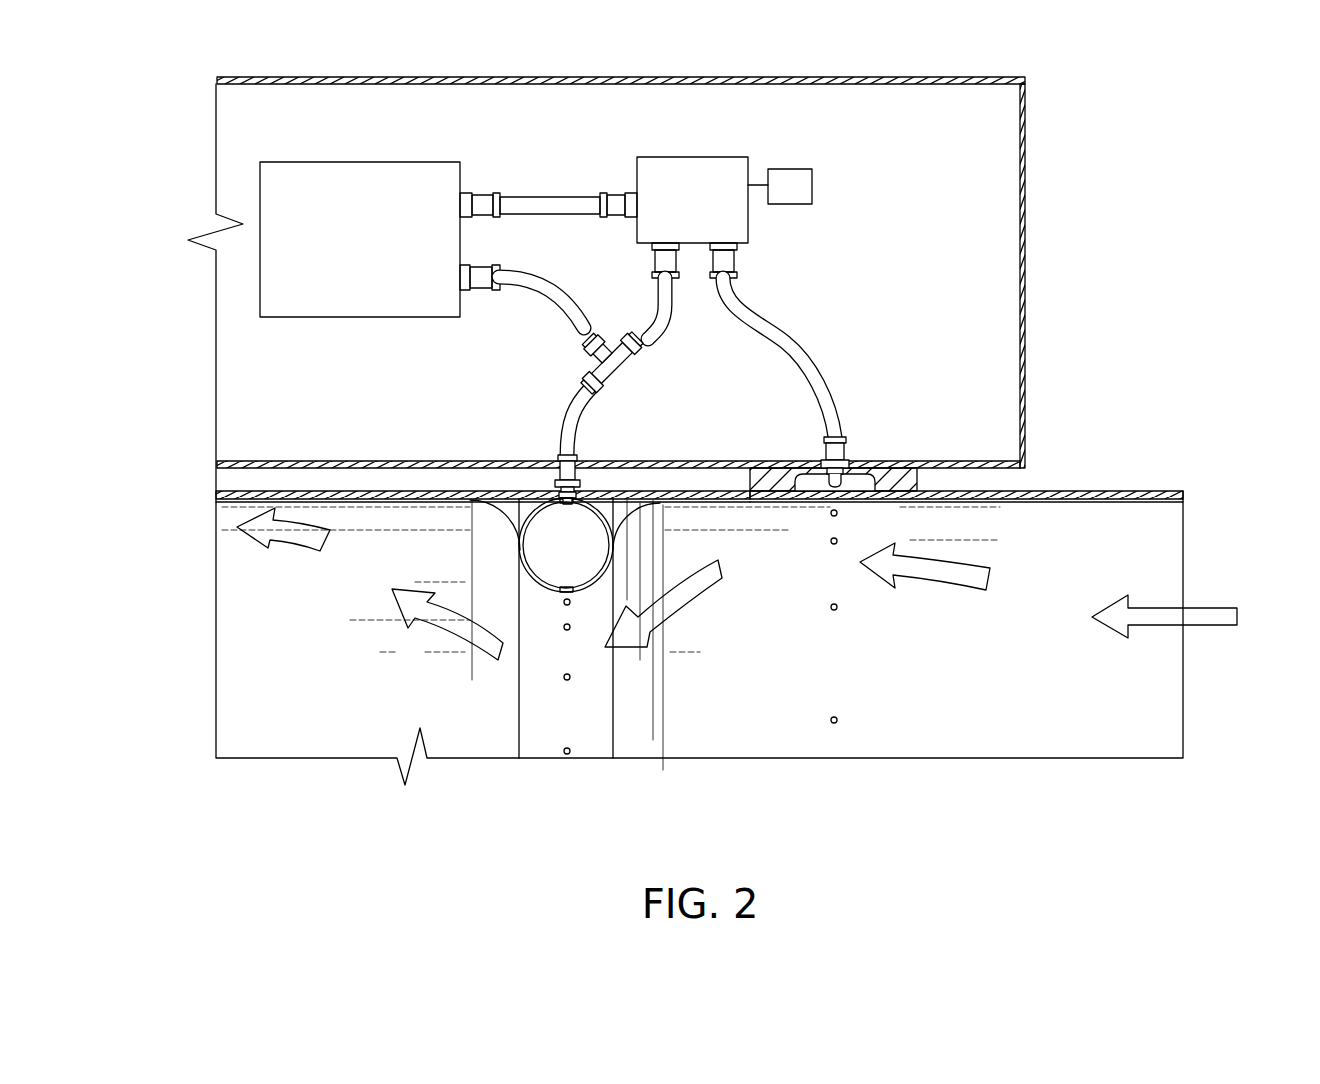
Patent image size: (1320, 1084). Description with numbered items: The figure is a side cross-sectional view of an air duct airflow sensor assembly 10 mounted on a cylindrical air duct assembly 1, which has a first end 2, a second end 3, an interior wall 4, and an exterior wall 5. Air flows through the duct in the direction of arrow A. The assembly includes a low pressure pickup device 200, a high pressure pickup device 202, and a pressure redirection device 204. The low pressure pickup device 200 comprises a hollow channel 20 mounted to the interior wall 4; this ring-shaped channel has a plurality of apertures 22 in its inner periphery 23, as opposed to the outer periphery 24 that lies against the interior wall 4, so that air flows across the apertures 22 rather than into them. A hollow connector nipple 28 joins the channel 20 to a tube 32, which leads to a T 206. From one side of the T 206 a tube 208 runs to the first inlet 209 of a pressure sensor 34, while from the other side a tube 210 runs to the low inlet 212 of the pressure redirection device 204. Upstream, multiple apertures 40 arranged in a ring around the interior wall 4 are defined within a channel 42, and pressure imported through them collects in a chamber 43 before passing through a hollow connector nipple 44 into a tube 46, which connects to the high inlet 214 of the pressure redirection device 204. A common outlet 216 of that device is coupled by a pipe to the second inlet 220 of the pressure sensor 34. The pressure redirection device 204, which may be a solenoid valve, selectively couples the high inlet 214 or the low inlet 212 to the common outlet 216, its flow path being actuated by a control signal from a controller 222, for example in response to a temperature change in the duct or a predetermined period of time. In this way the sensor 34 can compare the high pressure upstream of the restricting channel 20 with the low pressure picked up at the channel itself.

The air duct assembly 1 is at (1100, 432).
The first end 2 is at (1155, 545).
The second end 3 is at (250, 625).
The interior wall 4 is at (1010, 502).
The exterior wall 5 is at (417, 492).
The air duct airflow sensor assembly 10 is at (867, 175).
The hollow channel 20 is at (527, 512).
The apertures 22 is at (562, 675).
The inner periphery 23 is at (605, 575).
The outer periphery 24 is at (582, 492).
The hollow connector nipple 28 is at (563, 470).
The tube 32 is at (562, 417).
The pressure sensor 34 is at (393, 162).
The apertures 40 is at (840, 541).
The channel 42 is at (765, 472).
The chamber 43 is at (860, 487).
The hollow connector nipple 44 is at (838, 453).
The tube 46 is at (835, 375).
The low pressure pickup device 200 is at (560, 756).
The high pressure pickup device 202 is at (830, 752).
The pressure redirection device 204 is at (728, 157).
The T 206 is at (632, 380).
The tube 208 is at (547, 280).
The first inlet 209 is at (485, 292).
The tube 210 is at (677, 303).
The low inlet 212 is at (652, 270).
The high inlet 214 is at (737, 263).
The common outlet 216 is at (615, 193).
The second inlet 220 is at (487, 195).
The controller 222 is at (798, 169).
The arrow A is at (1213, 622).